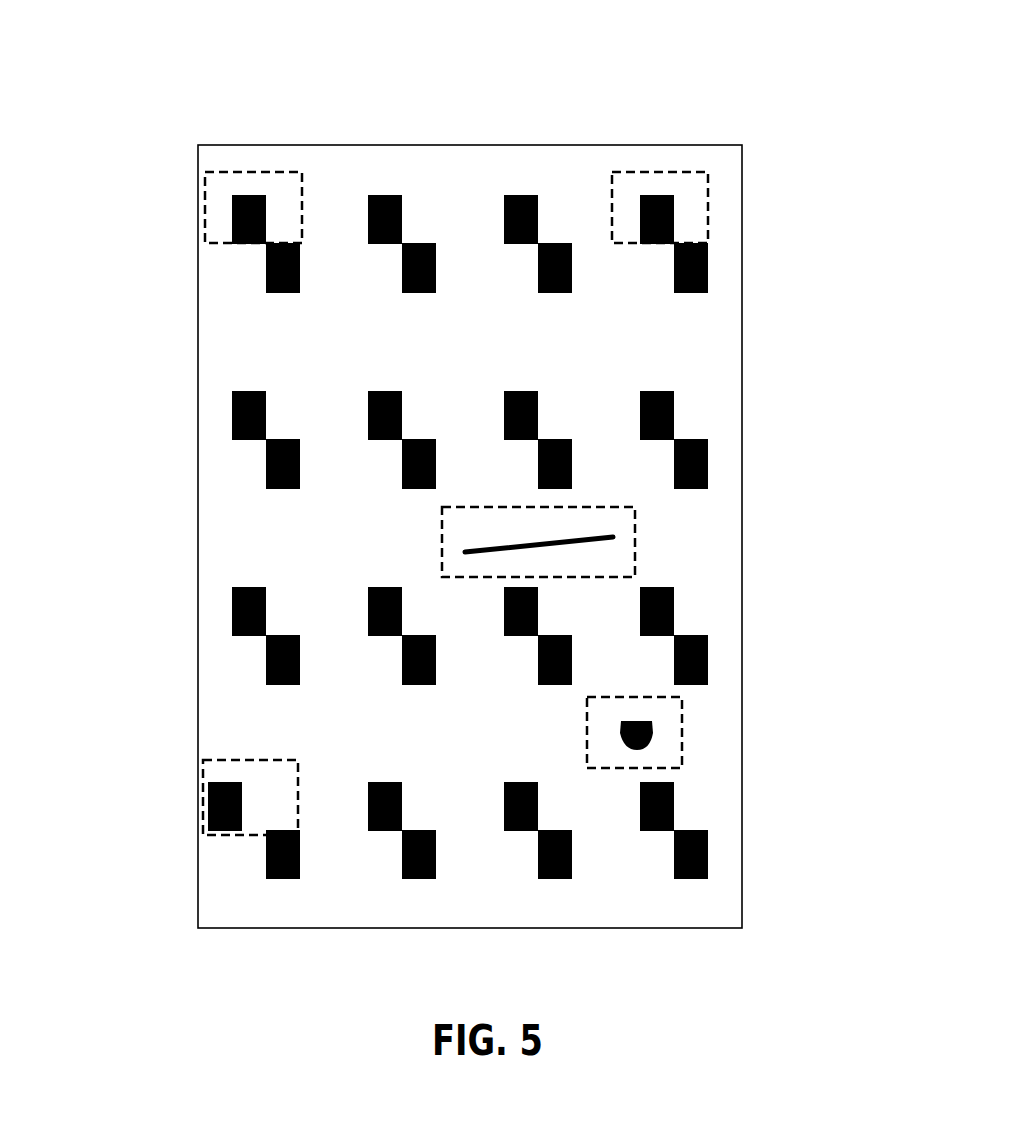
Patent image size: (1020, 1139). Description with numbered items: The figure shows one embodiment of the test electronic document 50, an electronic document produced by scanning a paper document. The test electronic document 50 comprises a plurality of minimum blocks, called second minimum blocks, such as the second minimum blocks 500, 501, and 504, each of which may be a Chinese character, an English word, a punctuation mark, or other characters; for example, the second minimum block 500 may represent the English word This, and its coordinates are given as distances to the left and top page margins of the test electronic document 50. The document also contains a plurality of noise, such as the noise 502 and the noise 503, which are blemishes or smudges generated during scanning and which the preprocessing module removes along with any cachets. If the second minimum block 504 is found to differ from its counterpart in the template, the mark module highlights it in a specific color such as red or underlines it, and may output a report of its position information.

The test electronic document 50 is at (403, 145).
The second minimum block 500 is at (203, 207).
The second minimum block 501 is at (708, 216).
The noise 502 is at (635, 538).
The noise 503 is at (682, 732).
The second minimum block 504 is at (205, 795).